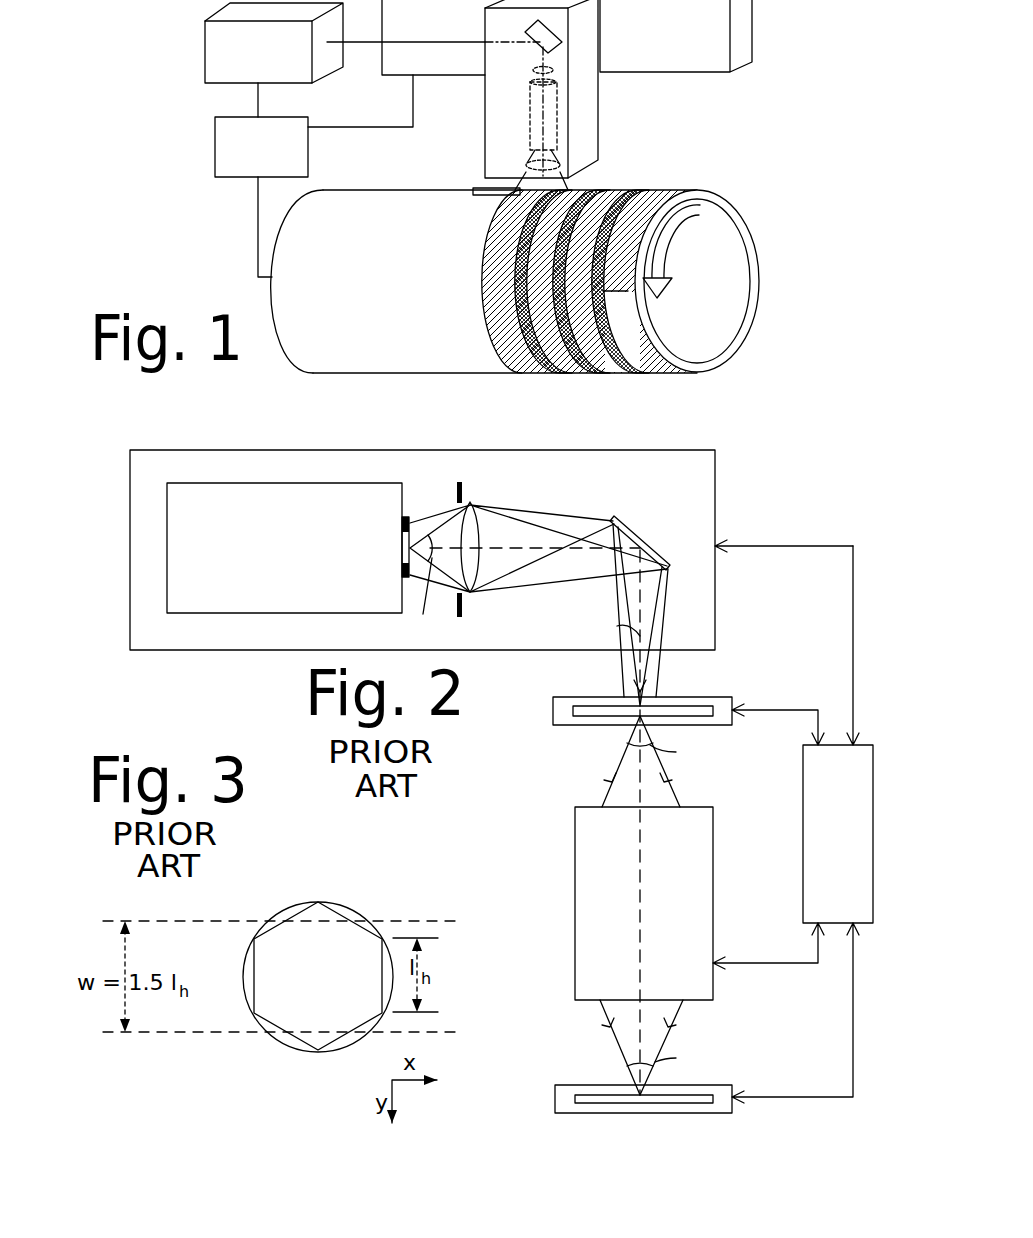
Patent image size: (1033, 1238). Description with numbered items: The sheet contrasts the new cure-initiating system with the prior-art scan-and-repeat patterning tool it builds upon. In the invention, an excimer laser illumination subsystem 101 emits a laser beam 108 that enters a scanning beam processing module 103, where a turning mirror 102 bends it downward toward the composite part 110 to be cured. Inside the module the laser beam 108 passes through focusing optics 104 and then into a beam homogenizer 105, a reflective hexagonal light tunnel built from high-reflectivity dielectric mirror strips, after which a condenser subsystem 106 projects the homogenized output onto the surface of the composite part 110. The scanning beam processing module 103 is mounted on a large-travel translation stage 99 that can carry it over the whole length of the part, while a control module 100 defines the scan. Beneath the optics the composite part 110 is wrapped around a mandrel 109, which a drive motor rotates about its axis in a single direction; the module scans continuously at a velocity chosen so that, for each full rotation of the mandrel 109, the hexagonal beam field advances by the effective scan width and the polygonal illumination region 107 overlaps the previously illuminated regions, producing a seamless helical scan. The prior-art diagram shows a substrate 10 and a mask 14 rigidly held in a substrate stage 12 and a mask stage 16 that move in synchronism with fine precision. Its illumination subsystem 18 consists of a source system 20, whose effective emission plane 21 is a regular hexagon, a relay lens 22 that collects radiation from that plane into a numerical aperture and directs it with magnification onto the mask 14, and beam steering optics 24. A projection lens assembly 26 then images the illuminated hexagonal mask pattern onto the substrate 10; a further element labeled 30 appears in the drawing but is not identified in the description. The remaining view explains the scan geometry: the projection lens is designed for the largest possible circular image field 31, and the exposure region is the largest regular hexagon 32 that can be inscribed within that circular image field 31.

In FIG. 1, the translation stage 99 is at (735, 76).
In FIG. 1, the control module 100 is at (222, 162).
In FIG. 1, the excimer laser illumination subsystem 101 is at (270, 87).
In FIG. 1, the turning mirror 102 is at (542, 48).
In FIG. 1, the scanning beam processing module 103 is at (588, 124).
In FIG. 1, the focusing optics 104 is at (532, 74).
In FIG. 1, the beam homogenizer 105 is at (553, 108).
In FIG. 1, the condenser subsystem 106 is at (560, 168).
In FIG. 1, the polygonal illumination region 107 is at (478, 186).
In FIG. 1, the laser beam 108 is at (362, 44).
In FIG. 1, the mandrel 109 is at (718, 260).
In FIG. 1, the composite part 110 is at (667, 190).
In FIG. 2, the substrate 10 is at (593, 1094).
In FIG. 2, the substrate stage 12 is at (556, 1107).
In FIG. 2, the mask 14 is at (603, 718).
In FIG. 2, the mask stage 16 is at (553, 710).
In FIG. 2, the illumination subsystem 18 is at (715, 490).
In FIG. 2, the source system 20 is at (255, 618).
In FIG. 2, the effective emission plane 21 is at (428, 518).
In FIG. 2, the relay lens 22 is at (480, 530).
In FIG. 2, the beam steering optics 24 is at (618, 517).
In FIG. 2, the projection lens assembly 26 is at (574, 862).
In FIG. 2, the controller C 30 is at (875, 778).
In FIG. 3, the circular image field 31 is at (268, 914).
In FIG. 3, the regular hexagon 32 is at (293, 1038).